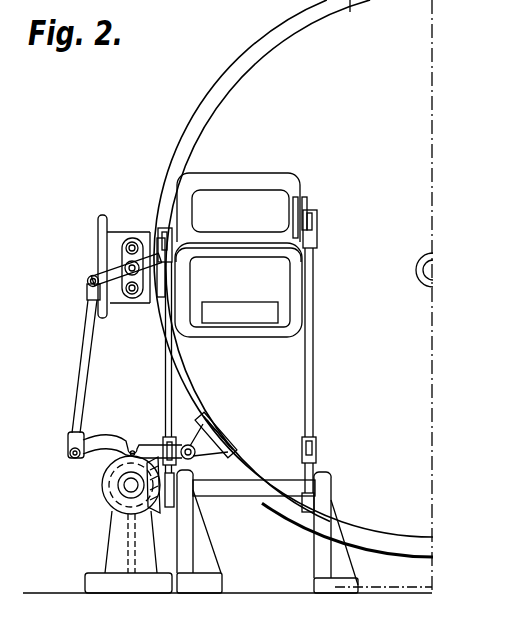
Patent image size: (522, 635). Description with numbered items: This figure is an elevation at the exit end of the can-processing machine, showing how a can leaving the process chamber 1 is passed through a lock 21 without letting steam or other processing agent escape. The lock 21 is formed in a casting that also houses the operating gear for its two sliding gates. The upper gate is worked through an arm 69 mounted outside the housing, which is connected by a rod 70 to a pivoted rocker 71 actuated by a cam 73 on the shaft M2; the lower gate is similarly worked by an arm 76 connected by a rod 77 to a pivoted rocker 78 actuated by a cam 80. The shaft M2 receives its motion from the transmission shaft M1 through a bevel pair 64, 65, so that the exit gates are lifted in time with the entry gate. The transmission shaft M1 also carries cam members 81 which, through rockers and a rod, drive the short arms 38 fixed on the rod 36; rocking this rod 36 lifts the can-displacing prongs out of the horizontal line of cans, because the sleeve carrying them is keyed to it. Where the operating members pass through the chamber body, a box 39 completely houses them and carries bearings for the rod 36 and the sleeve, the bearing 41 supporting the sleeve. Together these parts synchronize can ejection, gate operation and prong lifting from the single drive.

The process chamber 1 is at (293, 296).
The lock 21 is at (241, 188).
The rod (shaft) 36 is at (127, 265).
The short arms 38 is at (100, 276).
The box 39 is at (132, 300).
The bearing 41 is at (130, 242).
The bevel gear (of bevel pair) 64 is at (102, 489).
The bevel gear (of bevel pair) 65 is at (161, 511).
The arm 69 is at (318, 216).
The rod 70 is at (316, 289).
The rocker 71 is at (317, 450).
The cam 73 is at (305, 514).
The arm 76 is at (166, 228).
The rod 77 is at (167, 372).
The rocker 78 is at (165, 447).
The cam 80 is at (172, 507).
The cam members 81 is at (118, 510).
The transmission shaft M1 is at (130, 484).
The shaft M2 is at (266, 486).